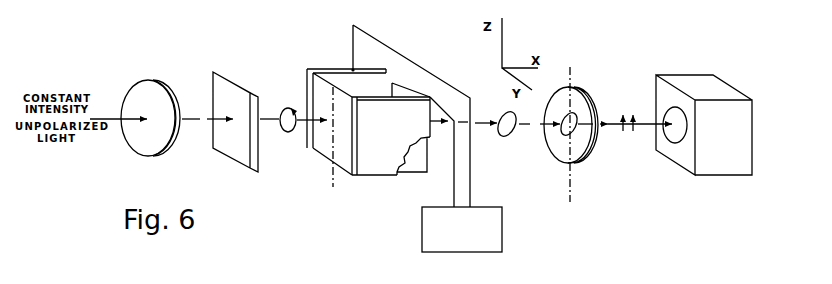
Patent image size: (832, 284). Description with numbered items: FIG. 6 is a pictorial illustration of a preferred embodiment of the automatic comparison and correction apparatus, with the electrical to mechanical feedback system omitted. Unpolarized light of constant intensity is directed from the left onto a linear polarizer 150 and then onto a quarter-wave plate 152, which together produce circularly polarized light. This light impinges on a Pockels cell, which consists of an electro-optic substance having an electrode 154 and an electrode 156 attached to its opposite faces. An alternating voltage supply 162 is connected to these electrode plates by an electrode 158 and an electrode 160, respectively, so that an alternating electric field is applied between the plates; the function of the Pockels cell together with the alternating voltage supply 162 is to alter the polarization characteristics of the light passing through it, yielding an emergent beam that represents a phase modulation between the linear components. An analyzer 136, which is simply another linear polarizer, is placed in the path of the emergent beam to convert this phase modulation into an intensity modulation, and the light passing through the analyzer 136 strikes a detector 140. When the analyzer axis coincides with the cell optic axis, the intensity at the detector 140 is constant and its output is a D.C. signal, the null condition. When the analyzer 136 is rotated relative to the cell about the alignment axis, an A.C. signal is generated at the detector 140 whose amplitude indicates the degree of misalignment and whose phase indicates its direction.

The linear polarizer 150 is at (147, 150).
The quarter-wave plate 152 is at (235, 158).
The electrode 154 is at (349, 143).
The electrode 156 is at (308, 73).
The electrode 158 is at (432, 108).
The electrode 160 is at (369, 31).
The alternating voltage supply 162 is at (453, 252).
The analyzer 136 is at (588, 155).
The detector 140 is at (743, 127).